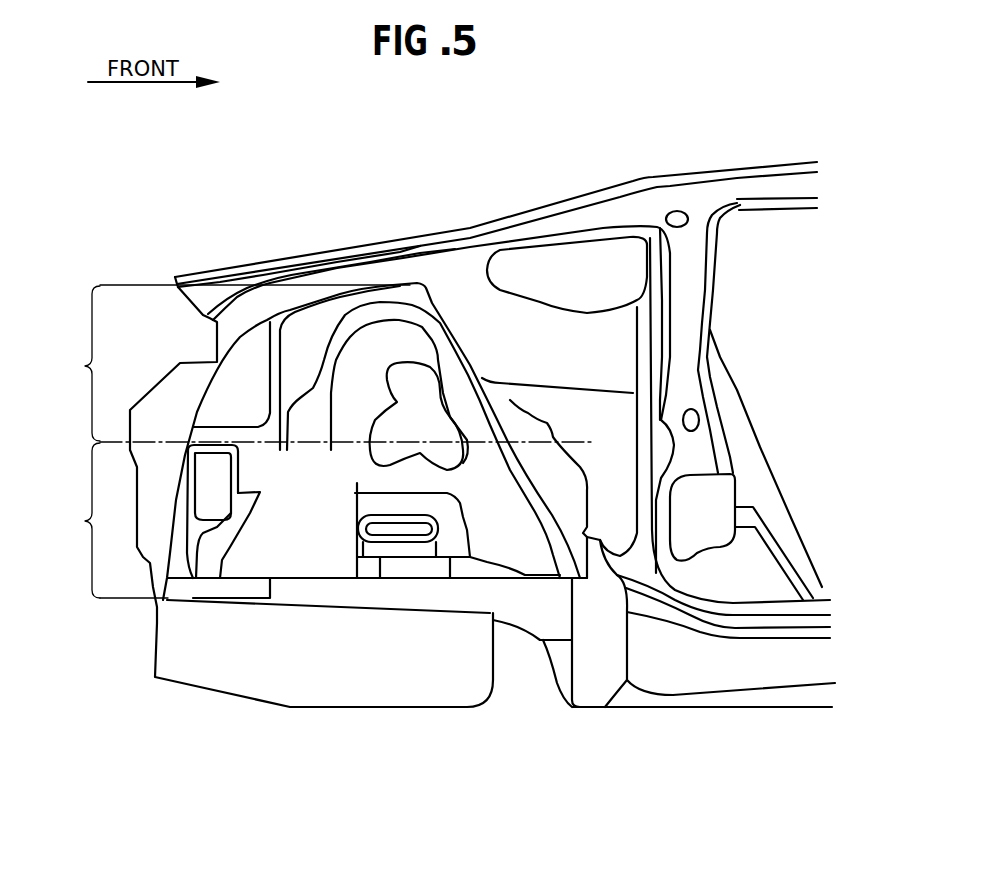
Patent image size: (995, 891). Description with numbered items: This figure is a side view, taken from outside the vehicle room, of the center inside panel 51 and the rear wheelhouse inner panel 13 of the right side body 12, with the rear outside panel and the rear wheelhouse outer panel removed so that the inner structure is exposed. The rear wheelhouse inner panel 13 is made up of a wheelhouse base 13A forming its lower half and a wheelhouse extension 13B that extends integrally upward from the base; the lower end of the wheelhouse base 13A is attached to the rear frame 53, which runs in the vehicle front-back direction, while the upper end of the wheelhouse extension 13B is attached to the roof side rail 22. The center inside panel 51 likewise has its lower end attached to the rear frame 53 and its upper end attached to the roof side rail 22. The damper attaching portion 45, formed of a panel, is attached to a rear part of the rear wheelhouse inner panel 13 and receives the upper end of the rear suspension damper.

The right side body 12 is at (655, 177).
The rear wheelhouse inner panel 13 is at (444, 320).
The wheelhouse base 13A is at (64, 520).
The wheelhouse extension 13B is at (64, 363).
The roof side rail 22 is at (368, 248).
The damper attaching portion 45 is at (313, 578).
The center inside panel 51 is at (690, 297).
The rear frame 53 is at (530, 598).